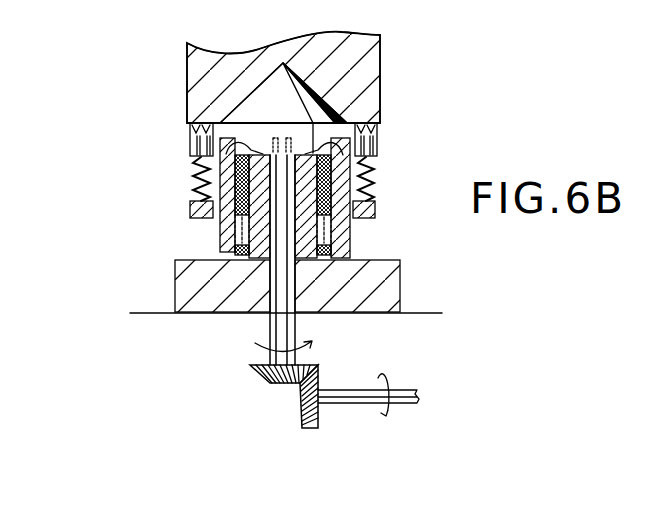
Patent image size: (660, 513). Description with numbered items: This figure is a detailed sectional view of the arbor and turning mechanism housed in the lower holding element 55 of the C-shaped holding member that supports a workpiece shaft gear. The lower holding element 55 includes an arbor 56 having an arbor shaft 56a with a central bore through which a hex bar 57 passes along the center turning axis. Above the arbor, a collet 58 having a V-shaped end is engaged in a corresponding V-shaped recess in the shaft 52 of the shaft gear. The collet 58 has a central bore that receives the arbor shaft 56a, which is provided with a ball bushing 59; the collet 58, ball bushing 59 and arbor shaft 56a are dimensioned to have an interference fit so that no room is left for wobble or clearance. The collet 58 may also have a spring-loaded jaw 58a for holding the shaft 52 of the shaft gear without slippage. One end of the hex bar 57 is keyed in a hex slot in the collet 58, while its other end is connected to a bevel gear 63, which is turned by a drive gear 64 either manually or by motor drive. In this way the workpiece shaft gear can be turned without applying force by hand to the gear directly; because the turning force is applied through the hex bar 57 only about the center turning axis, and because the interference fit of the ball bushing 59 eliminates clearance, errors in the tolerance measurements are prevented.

The shaft 52 is at (341, 67).
The lower holding element 55 is at (402, 112).
The arbor 56 is at (400, 281).
The arbor shaft 56a is at (330, 240).
The hex bar 57 is at (282, 323).
The collet 58 is at (258, 108).
The spring-loaded jaw 58a is at (190, 149).
The ball bushing 59 is at (226, 218).
The bevel gear 63 is at (262, 375).
The drive gear 64 is at (300, 403).